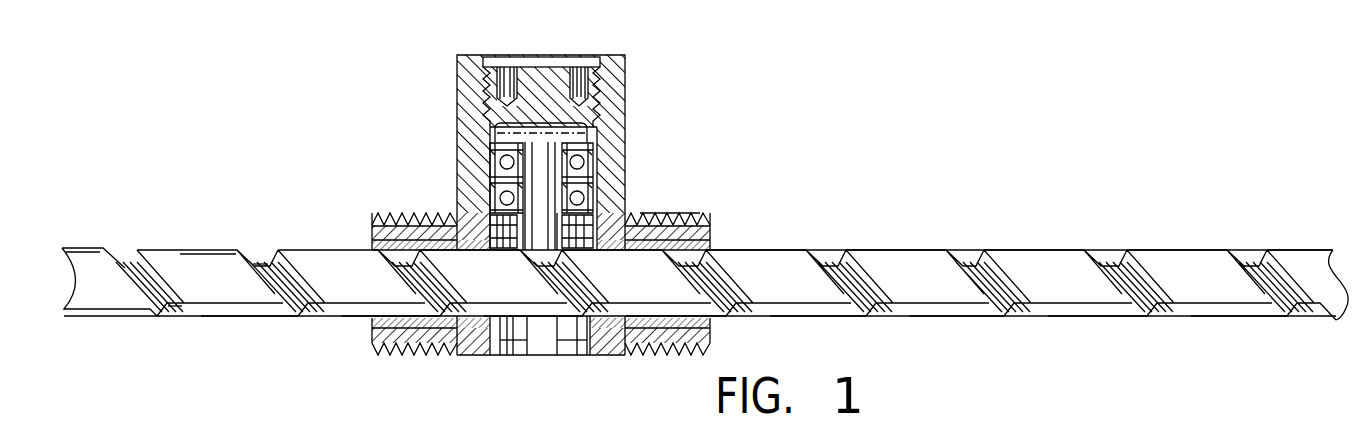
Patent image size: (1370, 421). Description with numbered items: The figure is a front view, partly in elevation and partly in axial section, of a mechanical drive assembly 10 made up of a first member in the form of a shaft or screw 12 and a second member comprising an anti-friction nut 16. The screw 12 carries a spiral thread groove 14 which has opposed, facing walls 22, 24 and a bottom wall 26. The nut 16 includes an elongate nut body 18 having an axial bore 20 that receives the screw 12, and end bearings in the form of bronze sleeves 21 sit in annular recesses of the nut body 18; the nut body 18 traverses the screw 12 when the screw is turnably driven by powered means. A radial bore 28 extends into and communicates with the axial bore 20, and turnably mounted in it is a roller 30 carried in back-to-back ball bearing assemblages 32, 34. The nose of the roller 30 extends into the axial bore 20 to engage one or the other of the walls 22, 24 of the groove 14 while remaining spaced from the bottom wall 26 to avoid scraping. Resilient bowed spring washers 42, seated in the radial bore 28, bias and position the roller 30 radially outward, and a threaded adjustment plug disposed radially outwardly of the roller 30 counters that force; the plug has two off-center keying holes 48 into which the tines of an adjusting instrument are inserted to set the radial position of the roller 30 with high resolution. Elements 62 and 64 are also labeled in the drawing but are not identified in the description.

The mechanical drive assembly 10 is at (682, 198).
The screw 12 is at (768, 256).
The spiral thread groove 14 is at (120, 252).
The anti-friction nut 16 is at (652, 55).
The nut body 18 is at (617, 97).
The axial bore 20 is at (606, 257).
The bronze sleeves 21 is at (373, 248).
The facing wall 22 is at (242, 249).
The facing wall 24 is at (270, 249).
The bottom wall 26 is at (176, 306).
The radial bore 28 is at (600, 160).
The roller 30 is at (525, 255).
The ball bearing assemblage 32 is at (492, 165).
The ball bearing assemblage 34 is at (493, 196).
The bowed spring washers 42 is at (500, 251).
The keying holes 48 is at (511, 67).
The lower fastener 62 is at (510, 380).
The lower fastener 64 is at (613, 380).